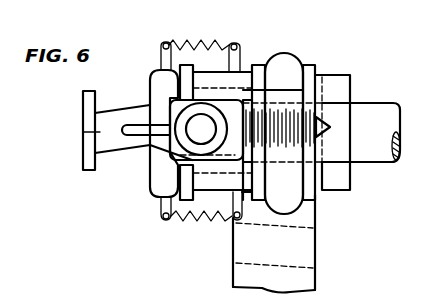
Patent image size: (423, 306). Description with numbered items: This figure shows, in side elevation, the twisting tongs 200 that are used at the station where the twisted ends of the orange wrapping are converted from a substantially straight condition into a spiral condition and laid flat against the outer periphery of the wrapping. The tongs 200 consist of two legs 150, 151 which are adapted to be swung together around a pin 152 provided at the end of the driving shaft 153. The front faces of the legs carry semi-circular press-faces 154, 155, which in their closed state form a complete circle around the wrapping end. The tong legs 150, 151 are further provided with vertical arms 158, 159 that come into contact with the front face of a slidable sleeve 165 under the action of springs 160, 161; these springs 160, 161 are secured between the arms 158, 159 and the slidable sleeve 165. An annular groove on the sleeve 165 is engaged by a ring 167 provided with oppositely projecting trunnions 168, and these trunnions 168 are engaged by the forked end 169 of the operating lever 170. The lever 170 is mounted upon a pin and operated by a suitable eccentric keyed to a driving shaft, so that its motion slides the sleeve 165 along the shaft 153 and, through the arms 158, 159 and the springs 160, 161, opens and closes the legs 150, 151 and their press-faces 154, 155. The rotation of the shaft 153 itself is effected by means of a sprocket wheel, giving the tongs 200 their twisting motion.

The tong leg 150 is at (112, 114).
The tong leg 151 is at (115, 145).
The pin 152 is at (203, 120).
The driving shaft 153 is at (372, 110).
The semi-circular press-face 154 is at (83, 106).
The semi-circular press-face 155 is at (95, 155).
The vertical arm 158 is at (158, 80).
The vertical arm 159 is at (153, 192).
The spring 160 is at (200, 42).
The spring 161 is at (196, 226).
The slidable sleeve 165 is at (243, 78).
The ring 167 is at (287, 60).
The trunnion 168 is at (313, 100).
The forked end 169 is at (312, 215).
The operating lever 170 is at (308, 282).
The tongs 200 is at (167, 140).